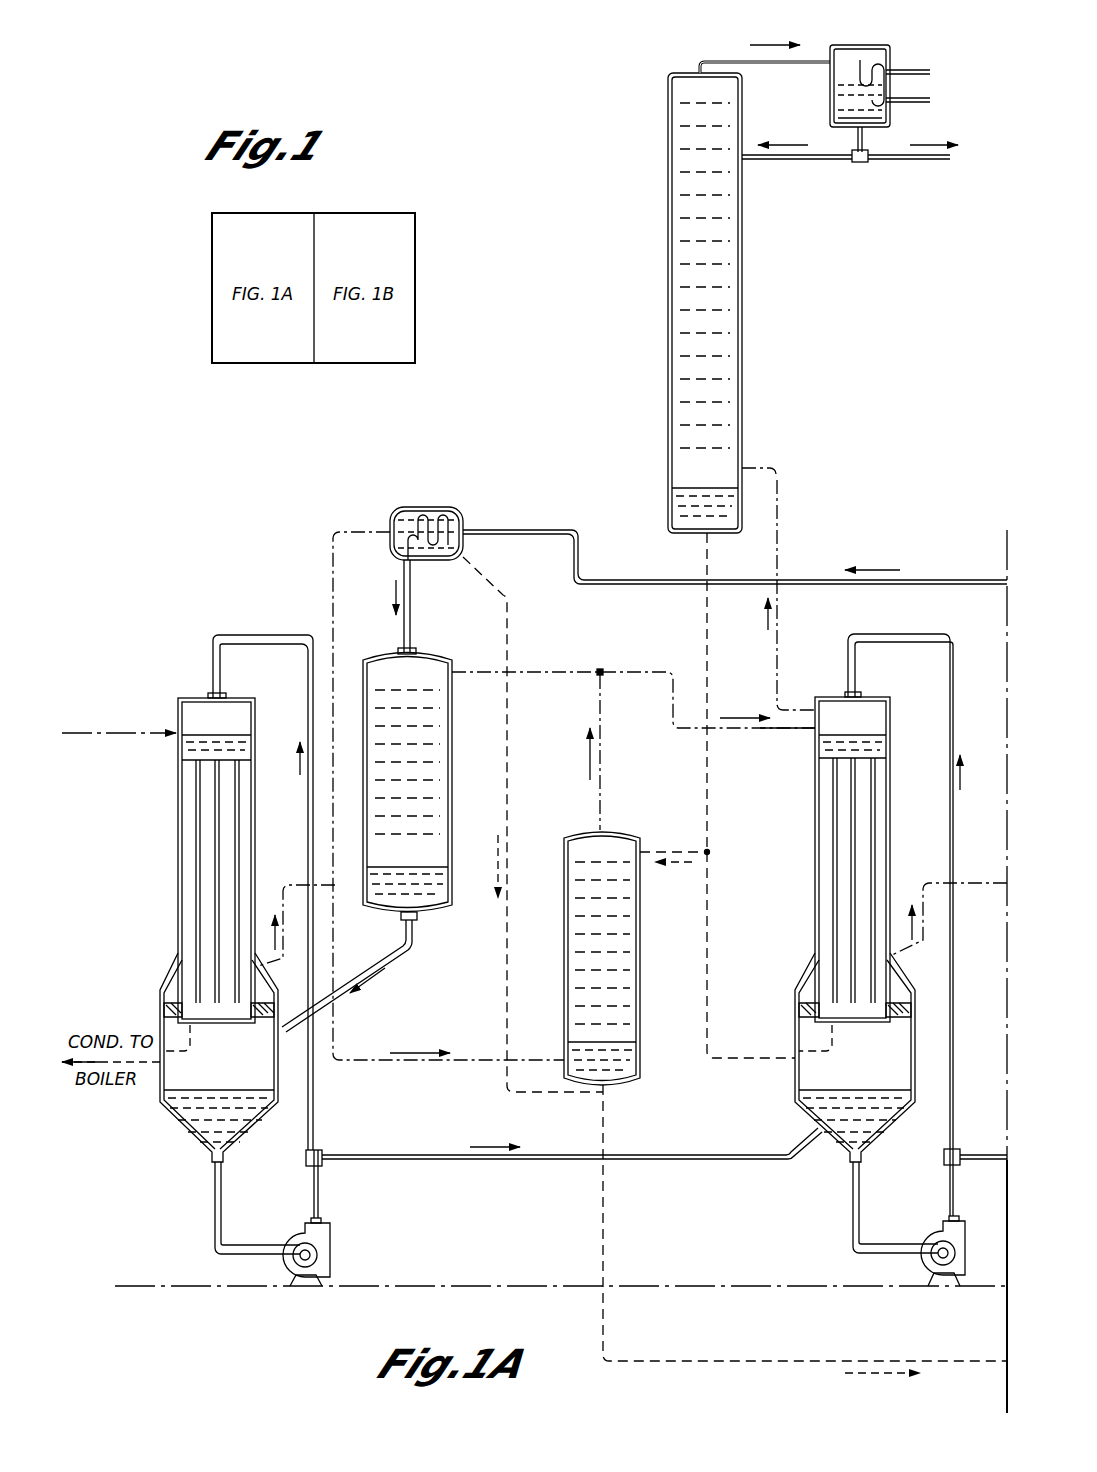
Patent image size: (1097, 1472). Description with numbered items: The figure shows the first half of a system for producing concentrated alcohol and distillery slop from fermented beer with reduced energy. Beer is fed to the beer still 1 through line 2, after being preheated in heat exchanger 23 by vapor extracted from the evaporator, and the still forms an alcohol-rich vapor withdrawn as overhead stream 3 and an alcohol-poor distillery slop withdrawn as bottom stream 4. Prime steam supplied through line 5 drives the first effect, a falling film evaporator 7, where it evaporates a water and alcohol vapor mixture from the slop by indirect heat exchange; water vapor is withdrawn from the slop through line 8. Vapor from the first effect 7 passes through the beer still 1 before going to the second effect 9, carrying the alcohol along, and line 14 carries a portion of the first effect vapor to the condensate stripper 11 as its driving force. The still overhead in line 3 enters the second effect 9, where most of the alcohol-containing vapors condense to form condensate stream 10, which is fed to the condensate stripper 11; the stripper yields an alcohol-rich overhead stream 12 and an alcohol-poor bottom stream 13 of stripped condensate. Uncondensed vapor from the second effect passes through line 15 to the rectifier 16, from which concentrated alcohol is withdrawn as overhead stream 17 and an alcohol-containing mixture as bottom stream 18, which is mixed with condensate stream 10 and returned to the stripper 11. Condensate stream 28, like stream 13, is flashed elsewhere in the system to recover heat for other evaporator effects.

The beer still 1 is at (435, 788).
The beer feed line 2 is at (575, 530).
The overhead stream 3 is at (518, 675).
The bottom stream 4 is at (370, 982).
The prime steam line 5 is at (140, 735).
The falling film evaporator 7 is at (185, 870).
The water vapor line 8 is at (283, 884).
The second effect 9 is at (808, 1075).
The condensate stream 10 is at (710, 962).
The condensate stripper 11 is at (628, 1005).
The overhead stream 12 is at (610, 800).
The bottom stream 13 is at (608, 1237).
The vapor line 14 is at (380, 1063).
The uncondensed vapor line 15 is at (785, 552).
The rectifier 16 is at (668, 268).
The overhead stream 17 is at (775, 62).
The bottom stream 18 is at (700, 608).
The heat exchanger 23 is at (440, 508).
The condensate stream 28 is at (508, 650).